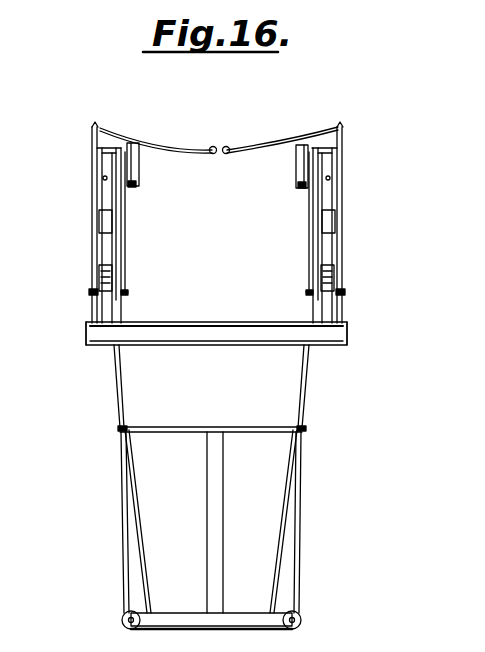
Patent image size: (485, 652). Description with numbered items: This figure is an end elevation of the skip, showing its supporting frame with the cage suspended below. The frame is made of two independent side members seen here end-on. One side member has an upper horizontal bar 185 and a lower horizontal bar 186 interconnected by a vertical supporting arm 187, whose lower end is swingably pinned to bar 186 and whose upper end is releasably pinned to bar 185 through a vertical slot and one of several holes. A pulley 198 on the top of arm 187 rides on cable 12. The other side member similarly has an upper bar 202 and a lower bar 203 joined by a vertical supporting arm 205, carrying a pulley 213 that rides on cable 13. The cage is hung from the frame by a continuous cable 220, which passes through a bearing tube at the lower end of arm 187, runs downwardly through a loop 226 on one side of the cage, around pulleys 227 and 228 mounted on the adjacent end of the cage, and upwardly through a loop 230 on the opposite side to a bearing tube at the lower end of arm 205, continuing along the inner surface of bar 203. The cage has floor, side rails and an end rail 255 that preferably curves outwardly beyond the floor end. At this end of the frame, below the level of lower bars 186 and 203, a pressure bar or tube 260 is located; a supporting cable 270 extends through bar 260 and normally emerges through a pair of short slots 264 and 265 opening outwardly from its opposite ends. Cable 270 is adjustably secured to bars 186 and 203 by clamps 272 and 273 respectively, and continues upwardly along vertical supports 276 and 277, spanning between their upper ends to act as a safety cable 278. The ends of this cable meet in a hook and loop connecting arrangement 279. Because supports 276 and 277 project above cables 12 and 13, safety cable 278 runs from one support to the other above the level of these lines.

The cable 12 is at (133, 188).
The cable 13 is at (298, 186).
The upper horizontal bar 185 is at (104, 210).
The lower horizontal bar 186 is at (104, 266).
The vertical supporting arm 187 is at (126, 234).
The pulley 198 is at (140, 166).
The upper horizontal bar 202 is at (329, 210).
The lower horizontal bar 203 is at (329, 266).
The vertical supporting arm 205 is at (309, 229).
The pulley 213 is at (296, 166).
The continuous cable 220 is at (308, 385).
The loop 226 is at (118, 428).
The pulley 227 is at (121, 621).
The pulley 228 is at (302, 620).
The loop 230 is at (306, 428).
The end rail 255 is at (213, 427).
The pressure bar 260 is at (224, 332).
The short slot 264 is at (86, 324).
The short slot 265 is at (345, 325).
The supporting cable 270 is at (343, 305).
The clamp 272 is at (90, 292).
The clamp 273 is at (342, 290).
The vertical support 276 is at (104, 92).
The vertical support 277 is at (340, 124).
The safety cable 278 is at (300, 119).
The hook and loop connecting arrangement 279 is at (224, 118).